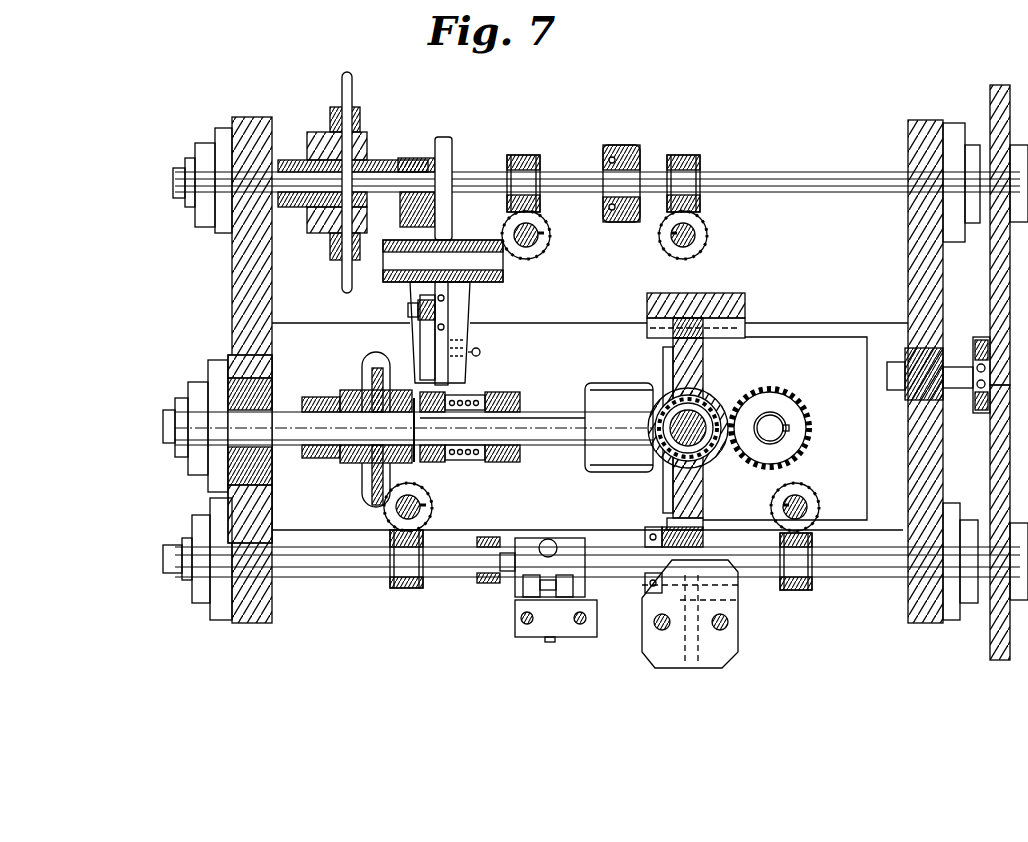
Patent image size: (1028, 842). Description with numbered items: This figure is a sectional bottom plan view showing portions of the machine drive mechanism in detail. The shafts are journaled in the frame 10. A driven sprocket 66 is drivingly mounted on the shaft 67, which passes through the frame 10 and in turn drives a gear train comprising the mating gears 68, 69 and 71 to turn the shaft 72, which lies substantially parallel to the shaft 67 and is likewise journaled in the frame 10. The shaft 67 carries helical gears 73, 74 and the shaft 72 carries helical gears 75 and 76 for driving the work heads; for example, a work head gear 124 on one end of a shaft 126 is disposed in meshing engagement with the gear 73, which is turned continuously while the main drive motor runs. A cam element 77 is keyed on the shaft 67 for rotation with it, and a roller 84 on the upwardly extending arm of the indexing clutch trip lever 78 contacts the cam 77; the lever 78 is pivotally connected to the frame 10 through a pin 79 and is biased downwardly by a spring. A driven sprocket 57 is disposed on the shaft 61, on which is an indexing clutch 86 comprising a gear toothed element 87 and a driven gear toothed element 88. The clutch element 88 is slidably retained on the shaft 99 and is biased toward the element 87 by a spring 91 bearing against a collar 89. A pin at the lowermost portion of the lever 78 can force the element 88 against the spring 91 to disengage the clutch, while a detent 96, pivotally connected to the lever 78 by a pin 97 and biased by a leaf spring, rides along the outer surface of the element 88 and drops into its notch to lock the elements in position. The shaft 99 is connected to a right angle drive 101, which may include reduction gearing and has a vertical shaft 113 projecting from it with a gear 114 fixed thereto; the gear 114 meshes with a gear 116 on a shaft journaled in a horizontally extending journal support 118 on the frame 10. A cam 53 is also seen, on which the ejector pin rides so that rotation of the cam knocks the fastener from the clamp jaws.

The frame 10 is at (920, 627).
The cam 53 is at (500, 590).
The driven sprocket 57 is at (372, 381).
The shaft 61 is at (286, 403).
The driven sprocket 66 is at (352, 76).
The shaft 67 is at (785, 172).
The gear 68 is at (992, 95).
The gear 69 is at (995, 330).
The gear 71 is at (990, 643).
The shaft 72 is at (330, 582).
The helical gear 73 is at (700, 200).
The helical gear 74 is at (540, 200).
The helical gear 75 is at (810, 590).
The helical gear 76 is at (405, 590).
The cam element 77 is at (410, 224).
The indexing clutch trip lever 78 is at (453, 218).
The pin 79 is at (383, 268).
The roller 84 is at (440, 140).
The indexing clutch 86 is at (412, 394).
The gear toothed element 87 is at (405, 468).
The driven gear toothed element 88 is at (465, 465).
The collar 89 is at (515, 395).
The spring 91 is at (478, 360).
The detent 96 is at (420, 333).
The pin 97 is at (410, 310).
The shaft 99 is at (565, 472).
The right angle drive 101 is at (800, 328).
The vertical shaft 113 is at (787, 428).
The gear 114 is at (775, 388).
The gear 116 is at (730, 470).
The journal support 118 is at (703, 346).
The gear 124 is at (530, 262).
The shaft 126 is at (540, 238).